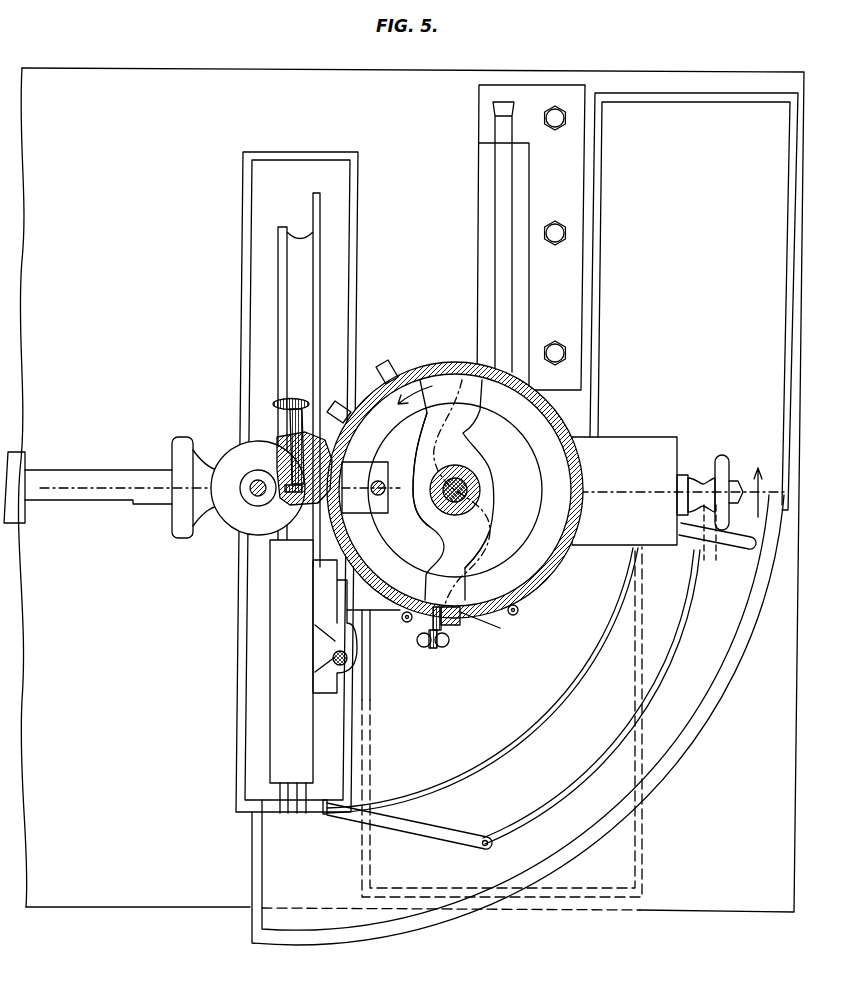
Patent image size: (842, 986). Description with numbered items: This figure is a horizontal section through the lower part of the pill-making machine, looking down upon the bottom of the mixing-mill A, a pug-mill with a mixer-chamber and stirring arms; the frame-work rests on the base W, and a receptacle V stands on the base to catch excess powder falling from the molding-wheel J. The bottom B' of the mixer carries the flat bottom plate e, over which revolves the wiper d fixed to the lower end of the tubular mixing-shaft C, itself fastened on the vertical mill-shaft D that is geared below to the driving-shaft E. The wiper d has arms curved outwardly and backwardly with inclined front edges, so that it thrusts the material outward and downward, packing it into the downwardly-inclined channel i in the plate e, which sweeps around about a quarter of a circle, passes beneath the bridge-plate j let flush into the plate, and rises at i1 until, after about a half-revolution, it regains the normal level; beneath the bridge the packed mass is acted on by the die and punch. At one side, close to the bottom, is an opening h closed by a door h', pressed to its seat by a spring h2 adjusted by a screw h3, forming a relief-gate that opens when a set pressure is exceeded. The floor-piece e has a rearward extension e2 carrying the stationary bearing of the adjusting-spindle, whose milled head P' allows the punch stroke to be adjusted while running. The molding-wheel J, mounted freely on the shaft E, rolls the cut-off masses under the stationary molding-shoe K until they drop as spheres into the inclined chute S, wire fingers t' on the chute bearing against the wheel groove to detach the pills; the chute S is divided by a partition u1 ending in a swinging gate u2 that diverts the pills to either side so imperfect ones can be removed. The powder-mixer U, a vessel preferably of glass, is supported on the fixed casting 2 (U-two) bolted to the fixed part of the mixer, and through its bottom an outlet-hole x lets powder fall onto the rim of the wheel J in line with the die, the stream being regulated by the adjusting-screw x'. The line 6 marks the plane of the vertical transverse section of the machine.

The base W is at (411, 490).
The receptacle V is at (243, 238).
The molding-wheel J is at (278, 323).
The molding-shoe K is at (335, 661).
The fingers t' is at (294, 812).
The powder-mixer U is at (239, 456).
The fixed casting 2 is at (241, 444).
The driving-shaft E is at (88, 487).
The section line 6 is at (413, 492).
The outlet-hole x is at (304, 475).
The adjusting-screw x' is at (291, 429).
The mixing-mill A is at (455, 491).
The bottom of the mixer B' is at (455, 490).
The tubular shaft C is at (480, 494).
The mill-shaft D is at (443, 500).
The wiper d is at (427, 451).
The bottom plate e is at (485, 549).
The channel i is at (399, 415).
The ascending portion of the channel i1 is at (407, 537).
The bridge-plate j is at (371, 487).
The opening h is at (469, 604).
The door h' is at (480, 636).
The spring h2 is at (447, 645).
The screw h3 is at (432, 648).
The rearward extension of the floor-piece e2 is at (650, 495).
The milled head P' is at (716, 502).
The chute S is at (518, 720).
The dividing partition u1 is at (591, 697).
The swinging gate u2 is at (407, 830).